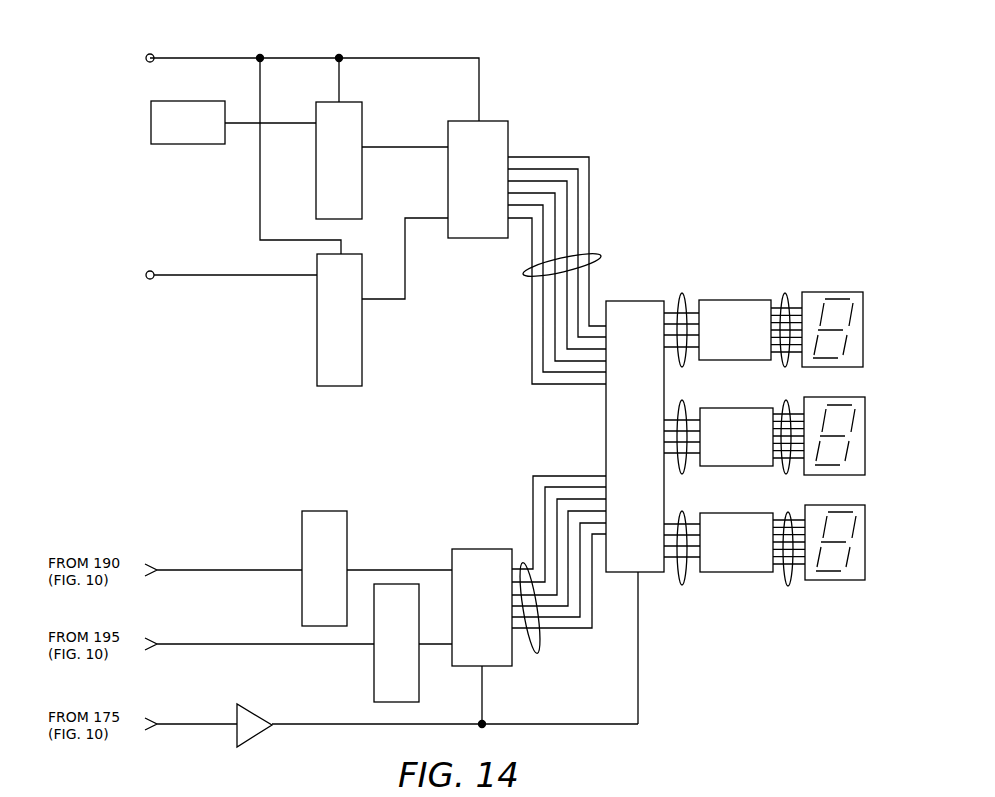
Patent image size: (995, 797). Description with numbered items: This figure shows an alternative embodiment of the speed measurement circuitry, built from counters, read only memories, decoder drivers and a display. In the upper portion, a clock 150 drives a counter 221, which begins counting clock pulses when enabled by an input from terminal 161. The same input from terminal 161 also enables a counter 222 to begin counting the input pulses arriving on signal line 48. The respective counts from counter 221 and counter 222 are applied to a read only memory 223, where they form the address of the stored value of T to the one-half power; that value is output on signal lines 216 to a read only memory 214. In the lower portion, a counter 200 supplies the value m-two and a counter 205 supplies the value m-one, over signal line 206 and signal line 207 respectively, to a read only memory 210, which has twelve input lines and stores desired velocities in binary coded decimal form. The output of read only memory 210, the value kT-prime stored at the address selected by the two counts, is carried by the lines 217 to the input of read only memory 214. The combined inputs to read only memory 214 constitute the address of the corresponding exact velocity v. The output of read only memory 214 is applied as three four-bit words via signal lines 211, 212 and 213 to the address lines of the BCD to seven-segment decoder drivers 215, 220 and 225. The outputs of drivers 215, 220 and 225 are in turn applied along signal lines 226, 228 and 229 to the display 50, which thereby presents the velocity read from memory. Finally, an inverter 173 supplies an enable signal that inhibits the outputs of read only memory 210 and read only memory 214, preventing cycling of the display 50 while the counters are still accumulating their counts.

The terminal 161 is at (150, 54).
The clock 150 is at (165, 138).
The counter 221 is at (358, 185).
The counter 222 is at (355, 350).
The read only memory 223 is at (510, 150).
The signal line 48 is at (150, 271).
The signal lines 216 is at (598, 258).
The ROM output lines 217 is at (540, 640).
The read only memory 214 is at (632, 308).
The signal lines 211 is at (684, 285).
The signal lines 212 is at (680, 403).
The signal lines 213 is at (681, 583).
The BCD to 7-segment decoder driver 215 is at (730, 305).
The BCD to 7-segment decoder driver 220 is at (735, 413).
The BCD to 7-segment decoder driver 225 is at (728, 530).
The signal lines 226 is at (786, 296).
The signal lines 228 is at (787, 403).
The signal lines 229 is at (787, 584).
The display 50 is at (845, 298).
The counter 200 is at (345, 522).
The counter 205 is at (378, 690).
The signal line 206 is at (400, 568).
The signal line 207 is at (435, 648).
The read only memory 210 is at (482, 565).
The inverter 173 is at (248, 726).